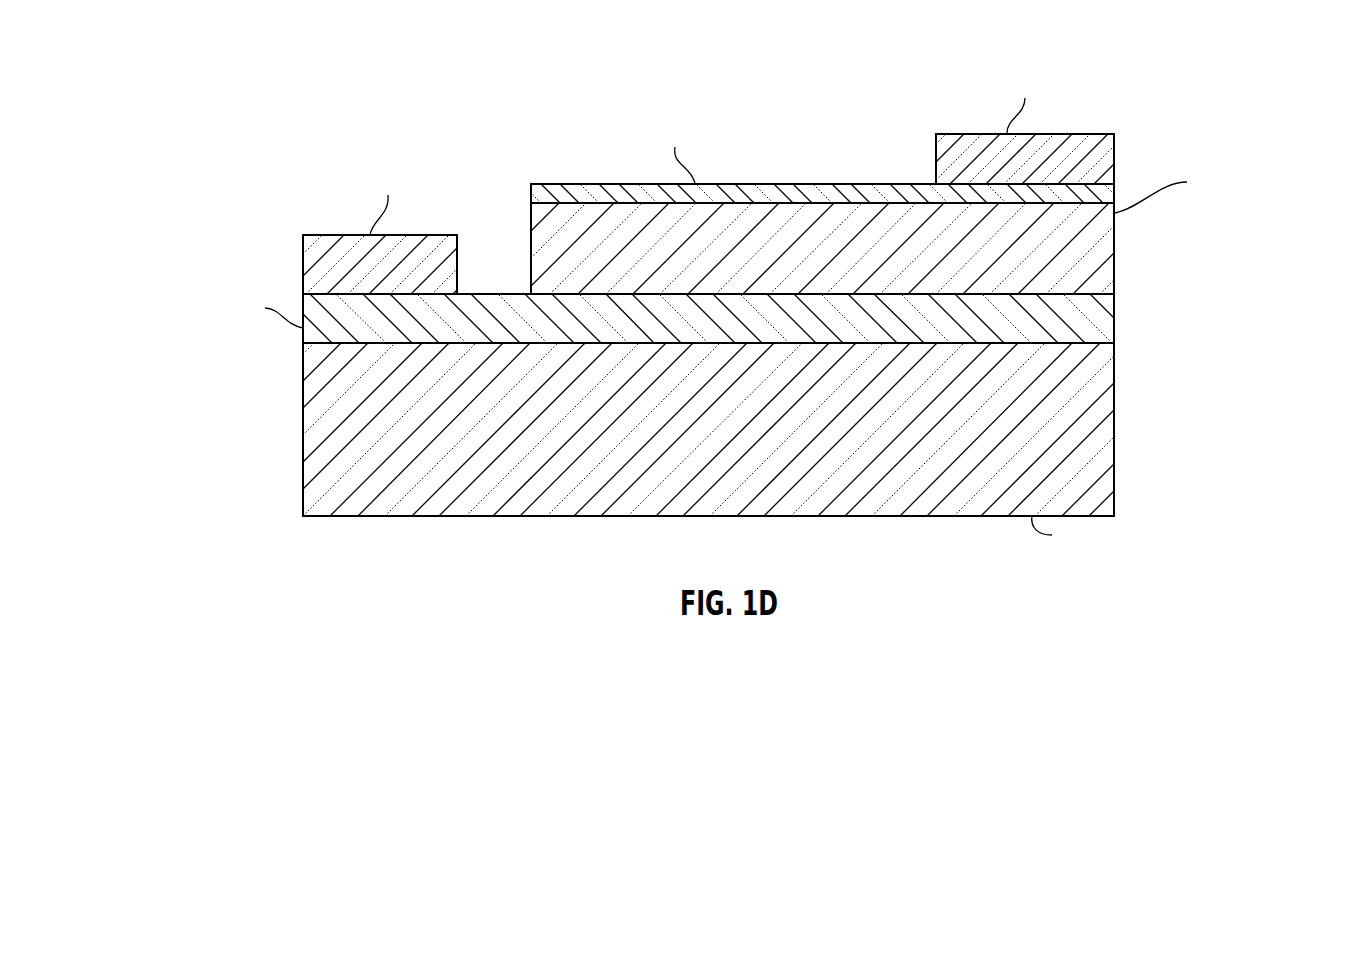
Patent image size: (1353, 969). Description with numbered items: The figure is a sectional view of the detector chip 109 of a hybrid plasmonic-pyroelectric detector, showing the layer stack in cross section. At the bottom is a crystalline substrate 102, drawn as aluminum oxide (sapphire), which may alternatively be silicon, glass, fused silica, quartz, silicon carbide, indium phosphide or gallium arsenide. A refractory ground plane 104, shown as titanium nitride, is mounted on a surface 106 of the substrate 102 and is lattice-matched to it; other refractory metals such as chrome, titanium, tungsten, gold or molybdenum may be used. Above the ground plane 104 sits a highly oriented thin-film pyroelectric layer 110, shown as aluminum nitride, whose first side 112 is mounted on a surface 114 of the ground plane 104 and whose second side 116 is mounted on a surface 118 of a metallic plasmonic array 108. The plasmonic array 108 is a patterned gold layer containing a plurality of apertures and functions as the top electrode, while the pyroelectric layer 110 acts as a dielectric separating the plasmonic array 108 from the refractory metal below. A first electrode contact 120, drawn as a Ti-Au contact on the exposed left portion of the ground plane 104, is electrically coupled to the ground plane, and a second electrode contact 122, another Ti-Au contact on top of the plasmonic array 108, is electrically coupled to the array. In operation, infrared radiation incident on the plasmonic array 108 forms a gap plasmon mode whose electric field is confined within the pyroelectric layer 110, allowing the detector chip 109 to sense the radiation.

The crystalline substrate 102 is at (1115, 420).
The refractory ground plane 104 is at (1114, 310).
The surface of the substrate 106 is at (457, 340).
The plasmonic array 108 is at (822, 183).
The detector chip 109 is at (580, 72).
The pyroelectric layer 110 is at (1114, 278).
The first side of the pyroelectric layer 112 is at (1057, 294).
The surface of the ground plane 114 is at (1080, 292).
The second side of the pyroelectric layer 116 is at (538, 197).
The surface of the plasmonic array 118 is at (1100, 204).
The first electrode contact 120 is at (303, 262).
The second electrode contact 122 is at (1115, 140).